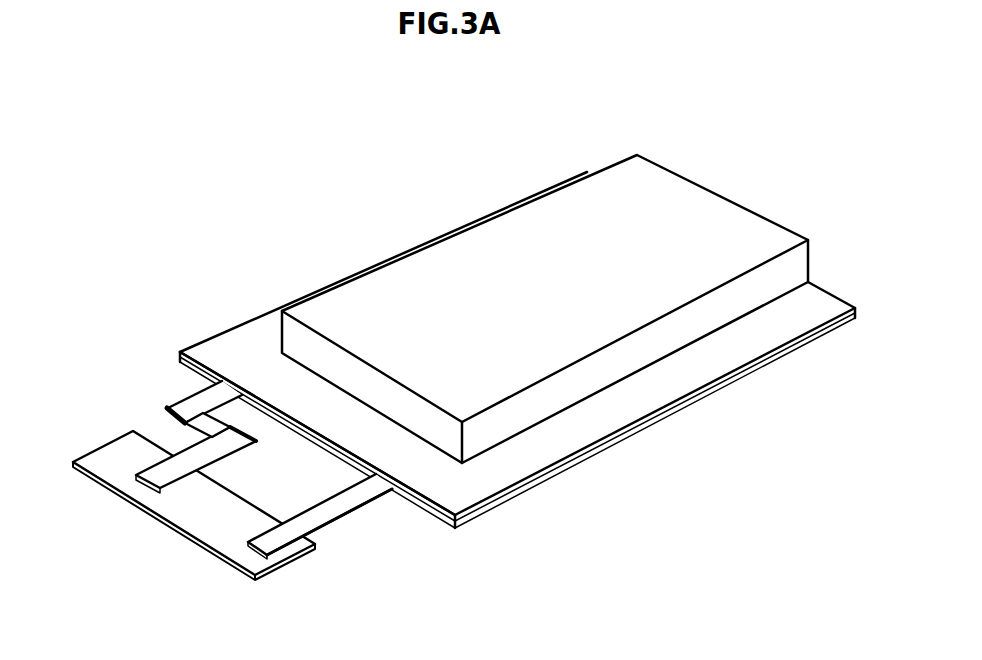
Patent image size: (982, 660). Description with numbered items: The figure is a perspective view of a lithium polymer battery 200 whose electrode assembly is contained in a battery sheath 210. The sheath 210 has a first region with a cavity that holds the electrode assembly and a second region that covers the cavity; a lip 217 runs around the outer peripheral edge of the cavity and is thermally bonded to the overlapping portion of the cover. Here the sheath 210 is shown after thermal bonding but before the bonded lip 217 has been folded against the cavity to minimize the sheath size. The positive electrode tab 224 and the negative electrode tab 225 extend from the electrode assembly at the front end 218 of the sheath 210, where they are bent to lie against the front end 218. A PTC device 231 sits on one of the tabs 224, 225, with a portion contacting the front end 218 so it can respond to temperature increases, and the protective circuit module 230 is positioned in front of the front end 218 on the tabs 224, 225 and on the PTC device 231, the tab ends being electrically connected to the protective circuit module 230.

The bare cell 200 is at (755, 172).
The battery sheath 210 is at (470, 248).
The lip 217 is at (270, 322).
The front end 218 is at (432, 419).
The positive electrode tab 224 is at (268, 541).
The negative electrode tab 225 is at (205, 399).
The protective circuit module 230 is at (110, 472).
The PTC device 231 is at (182, 410).